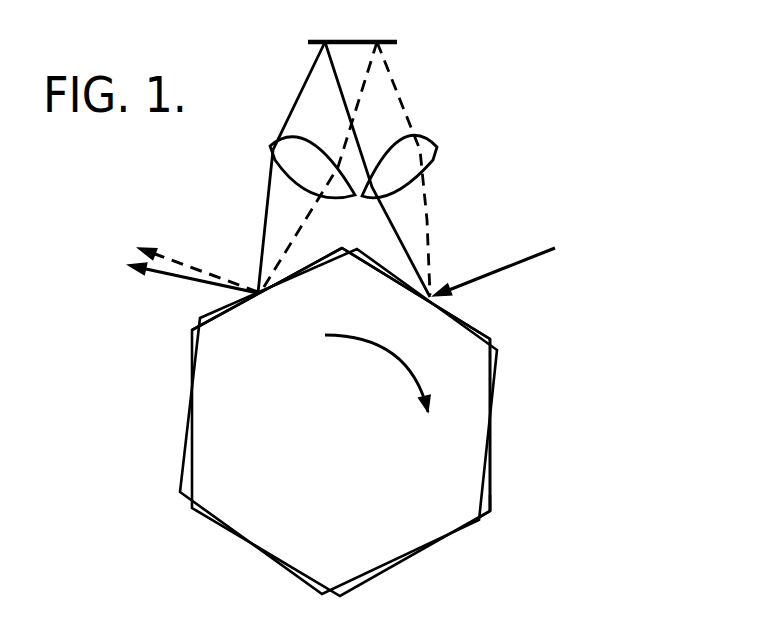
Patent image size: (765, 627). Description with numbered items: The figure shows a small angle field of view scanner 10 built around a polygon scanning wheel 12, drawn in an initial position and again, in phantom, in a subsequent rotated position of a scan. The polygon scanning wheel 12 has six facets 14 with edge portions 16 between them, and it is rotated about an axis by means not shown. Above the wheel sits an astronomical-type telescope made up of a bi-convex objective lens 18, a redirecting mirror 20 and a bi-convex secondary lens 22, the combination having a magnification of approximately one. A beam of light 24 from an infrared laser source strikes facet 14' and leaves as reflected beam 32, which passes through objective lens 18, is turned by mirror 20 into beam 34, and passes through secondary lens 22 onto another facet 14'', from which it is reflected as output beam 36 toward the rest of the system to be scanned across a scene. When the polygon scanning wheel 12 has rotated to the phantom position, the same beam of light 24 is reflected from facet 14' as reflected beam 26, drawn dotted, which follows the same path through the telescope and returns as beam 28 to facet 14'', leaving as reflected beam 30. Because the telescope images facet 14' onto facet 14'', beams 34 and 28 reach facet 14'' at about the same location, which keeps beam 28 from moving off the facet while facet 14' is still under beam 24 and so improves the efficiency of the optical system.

The small angle field of view scanner 10 is at (543, 155).
The polygon scanning wheel 12 is at (470, 430).
The facets 14 is at (515, 425).
The facet 14' is at (440, 293).
The facet 14'' is at (257, 289).
The edge portions 16 is at (494, 512).
The bi-convex objective lens 18 is at (417, 145).
The redirecting mirror 20 is at (343, 40).
The bi-convex secondary lens 22 is at (280, 143).
The beam of light 24 is at (538, 256).
The reflected beam 26 is at (430, 270).
The beam 28 is at (297, 238).
The reflected beam 30 is at (162, 254).
The reflected beam 32 is at (425, 231).
The beam 34 is at (308, 82).
The output beam 36 is at (192, 299).